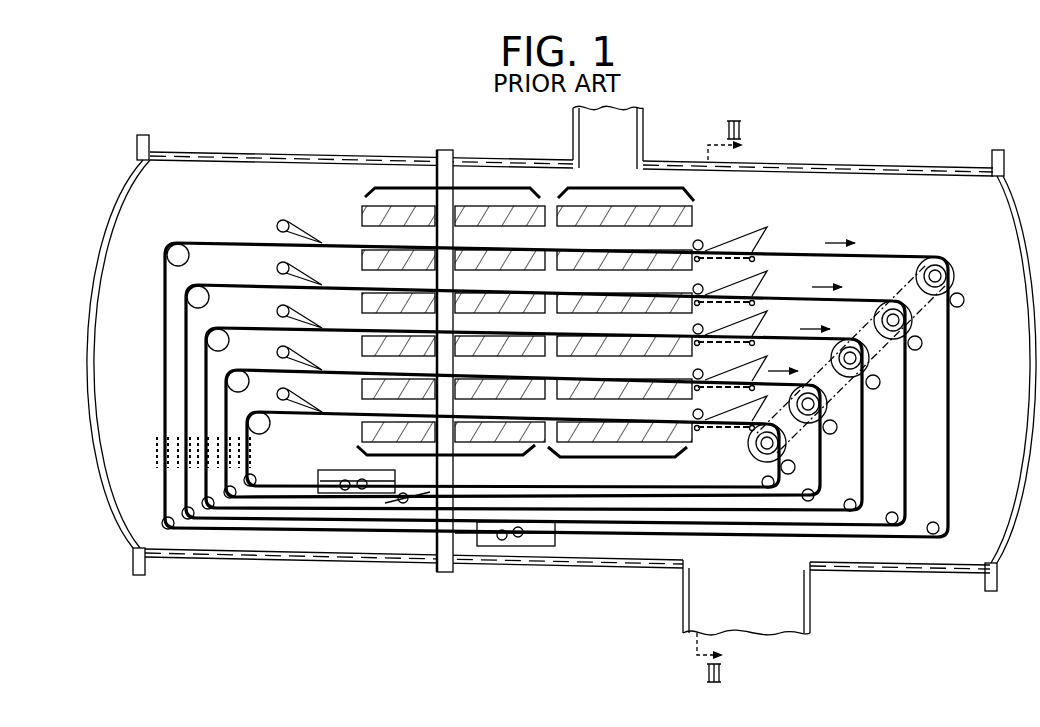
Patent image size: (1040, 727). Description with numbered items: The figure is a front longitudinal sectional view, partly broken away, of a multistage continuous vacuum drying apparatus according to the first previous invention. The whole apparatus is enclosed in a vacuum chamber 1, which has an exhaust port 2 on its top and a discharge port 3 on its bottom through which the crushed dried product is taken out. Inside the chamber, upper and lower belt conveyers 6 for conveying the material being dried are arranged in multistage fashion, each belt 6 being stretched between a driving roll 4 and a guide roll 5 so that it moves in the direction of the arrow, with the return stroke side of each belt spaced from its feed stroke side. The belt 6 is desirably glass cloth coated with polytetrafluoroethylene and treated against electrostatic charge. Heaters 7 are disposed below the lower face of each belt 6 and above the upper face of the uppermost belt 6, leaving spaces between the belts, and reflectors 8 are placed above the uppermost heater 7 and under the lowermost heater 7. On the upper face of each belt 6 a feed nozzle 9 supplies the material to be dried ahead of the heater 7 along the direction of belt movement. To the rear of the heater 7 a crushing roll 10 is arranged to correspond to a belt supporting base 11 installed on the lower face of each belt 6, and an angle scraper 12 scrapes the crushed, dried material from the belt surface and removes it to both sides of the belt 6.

The vacuum chamber 1 is at (1039, 360).
The exhaust port 2 is at (574, 121).
The discharge port 3 is at (812, 598).
The driving roll 4 is at (945, 259).
The guide roll 5 is at (180, 247).
The belt conveyer 6 is at (878, 256).
The heater 7 is at (693, 220).
The reflector 8 is at (495, 186).
The feed nozzle 9 is at (304, 236).
The crushing roll 10 is at (701, 245).
The belt supporting base 11 is at (727, 258).
The angle scraper 12 is at (752, 247).